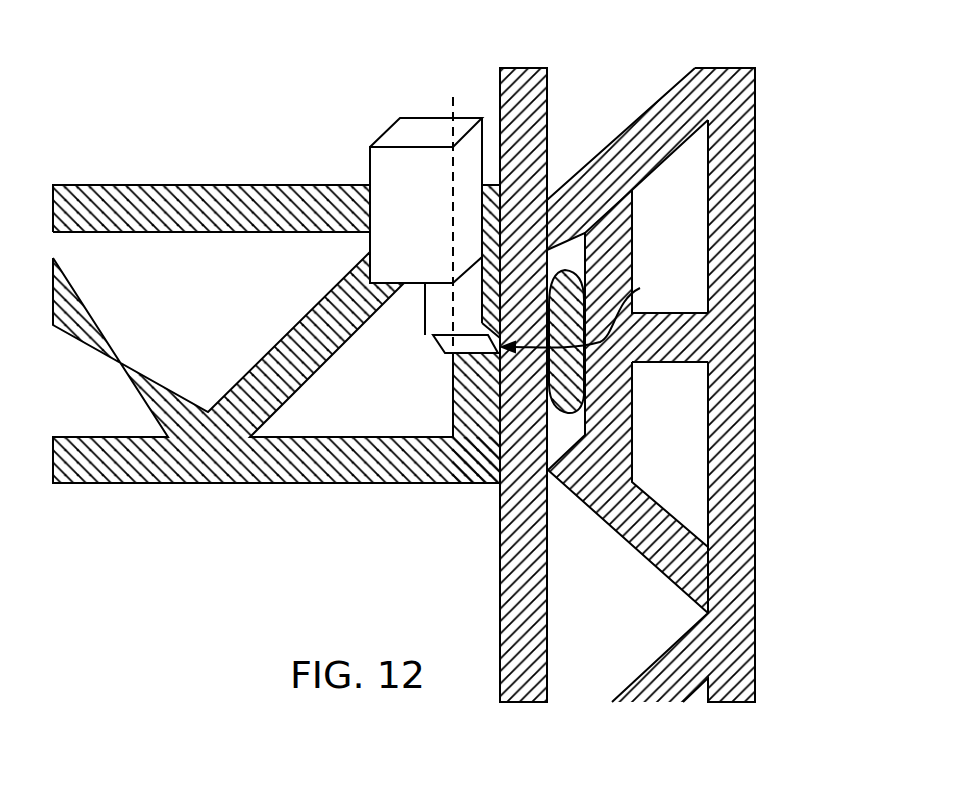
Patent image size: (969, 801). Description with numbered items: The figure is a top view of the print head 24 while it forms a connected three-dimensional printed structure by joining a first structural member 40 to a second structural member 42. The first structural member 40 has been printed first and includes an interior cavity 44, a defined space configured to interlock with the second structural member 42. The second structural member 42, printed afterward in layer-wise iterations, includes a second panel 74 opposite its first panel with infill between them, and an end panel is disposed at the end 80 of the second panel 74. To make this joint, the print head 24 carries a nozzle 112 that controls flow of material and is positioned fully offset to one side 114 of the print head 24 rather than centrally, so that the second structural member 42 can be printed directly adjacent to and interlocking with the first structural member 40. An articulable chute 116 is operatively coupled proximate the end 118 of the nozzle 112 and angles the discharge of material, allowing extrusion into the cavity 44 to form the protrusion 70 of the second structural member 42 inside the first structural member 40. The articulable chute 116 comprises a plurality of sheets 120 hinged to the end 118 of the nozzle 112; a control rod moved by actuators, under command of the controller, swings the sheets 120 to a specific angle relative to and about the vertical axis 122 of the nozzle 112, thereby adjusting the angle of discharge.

The print head 24 is at (405, 133).
The first structural member 40 is at (733, 214).
The second structural member 42 is at (228, 201).
The interior cavity 44 is at (567, 248).
The protrusion 70 is at (583, 323).
The second panel 74 is at (288, 470).
The end 80 is at (478, 473).
The nozzle 112 is at (440, 300).
The side 114 is at (470, 155).
The articulable chute 116 is at (640, 288).
The end 118 is at (440, 332).
The plurality of sheets 120 is at (500, 340).
The vertical axis 122 is at (453, 97).